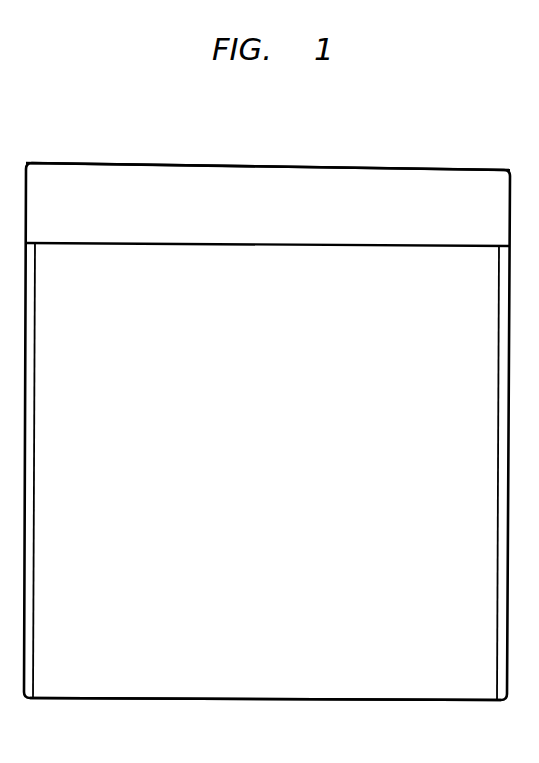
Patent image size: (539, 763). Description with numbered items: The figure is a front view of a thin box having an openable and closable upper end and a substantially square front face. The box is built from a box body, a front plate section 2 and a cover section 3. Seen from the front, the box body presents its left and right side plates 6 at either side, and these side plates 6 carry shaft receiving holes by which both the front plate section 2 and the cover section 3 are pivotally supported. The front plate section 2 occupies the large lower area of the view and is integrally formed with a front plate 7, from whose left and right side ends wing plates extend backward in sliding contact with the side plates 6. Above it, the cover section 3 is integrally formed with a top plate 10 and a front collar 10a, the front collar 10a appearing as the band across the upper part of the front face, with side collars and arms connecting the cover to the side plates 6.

The front plate section 2 is at (292, 702).
The cover section 3 is at (375, 148).
The side plates 6 is at (500, 385).
The front plate 7 is at (370, 690).
The top plate 10 is at (288, 167).
The front collar 10a is at (200, 177).